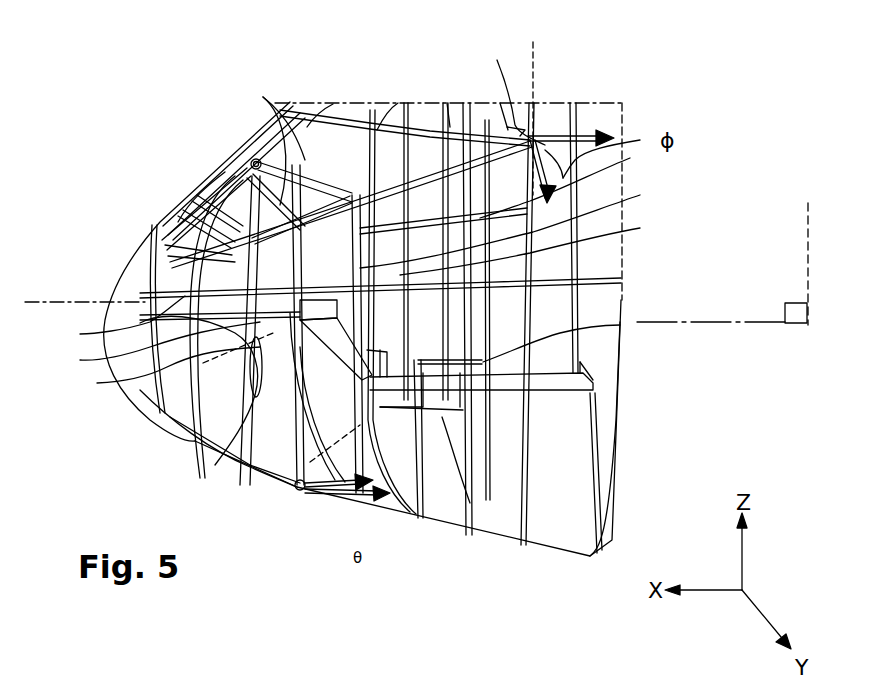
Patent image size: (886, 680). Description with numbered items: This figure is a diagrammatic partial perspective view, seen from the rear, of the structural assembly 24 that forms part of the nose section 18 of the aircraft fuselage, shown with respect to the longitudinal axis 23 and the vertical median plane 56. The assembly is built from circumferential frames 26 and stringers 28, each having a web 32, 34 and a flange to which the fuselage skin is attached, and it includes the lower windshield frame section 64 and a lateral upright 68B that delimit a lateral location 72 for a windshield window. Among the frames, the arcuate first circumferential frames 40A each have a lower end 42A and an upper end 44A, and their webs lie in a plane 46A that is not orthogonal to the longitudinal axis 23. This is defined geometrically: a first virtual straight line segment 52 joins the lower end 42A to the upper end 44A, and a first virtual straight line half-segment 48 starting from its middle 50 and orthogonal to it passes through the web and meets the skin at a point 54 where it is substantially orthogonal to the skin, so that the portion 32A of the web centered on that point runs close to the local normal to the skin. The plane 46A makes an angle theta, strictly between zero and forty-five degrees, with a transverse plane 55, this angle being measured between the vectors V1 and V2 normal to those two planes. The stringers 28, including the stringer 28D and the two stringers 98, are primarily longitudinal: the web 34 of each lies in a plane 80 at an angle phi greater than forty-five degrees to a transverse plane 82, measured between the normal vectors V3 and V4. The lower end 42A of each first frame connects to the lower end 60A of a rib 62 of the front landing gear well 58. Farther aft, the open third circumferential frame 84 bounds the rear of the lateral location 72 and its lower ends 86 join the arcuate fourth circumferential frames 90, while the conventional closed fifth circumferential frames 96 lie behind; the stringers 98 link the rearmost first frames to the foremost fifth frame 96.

The nose section 18 is at (632, 463).
The structural assembly 24 is at (235, 450).
The longitudinal axis 23 is at (740, 323).
The circumferential frames 26 is at (622, 195).
The stringers 28 is at (507, 90).
The stringer 28D is at (504, 116).
The web 32 is at (527, 324).
The portion of the web 32A is at (172, 410).
The web 34 is at (443, 221).
The first circumferential frames 40A is at (228, 440).
The lower end 42A is at (296, 490).
The upper end 44A is at (240, 164).
The plane 46A is at (168, 343).
The first virtual straight line half-segment 48 is at (193, 440).
The middle 50 is at (255, 455).
The first virtual straight line segment 52 is at (273, 455).
The point 54 is at (164, 319).
The transverse plane 55 is at (320, 497).
The vertical median plane 56 is at (790, 313).
The front landing gear well 58 is at (548, 372).
The lower end of rib 60A is at (427, 512).
The rib 62 is at (620, 328).
The lower windshield frame section 64 is at (283, 127).
The lateral upright 68B is at (289, 127).
The lateral locations 72 is at (347, 110).
The plane 80 is at (512, 127).
The transverse plane 82 is at (545, 100).
The third circumferential frame 84 is at (337, 313).
The lower ends 86 is at (113, 300).
The fourth circumferential frames 90 is at (622, 228).
The fifth circumferential frames 96 is at (574, 238).
The stringers 98 is at (478, 497).
The vector V1 is at (345, 497).
The vector V2 is at (370, 500).
The vector V3 is at (622, 158).
The vector V4 is at (588, 133).